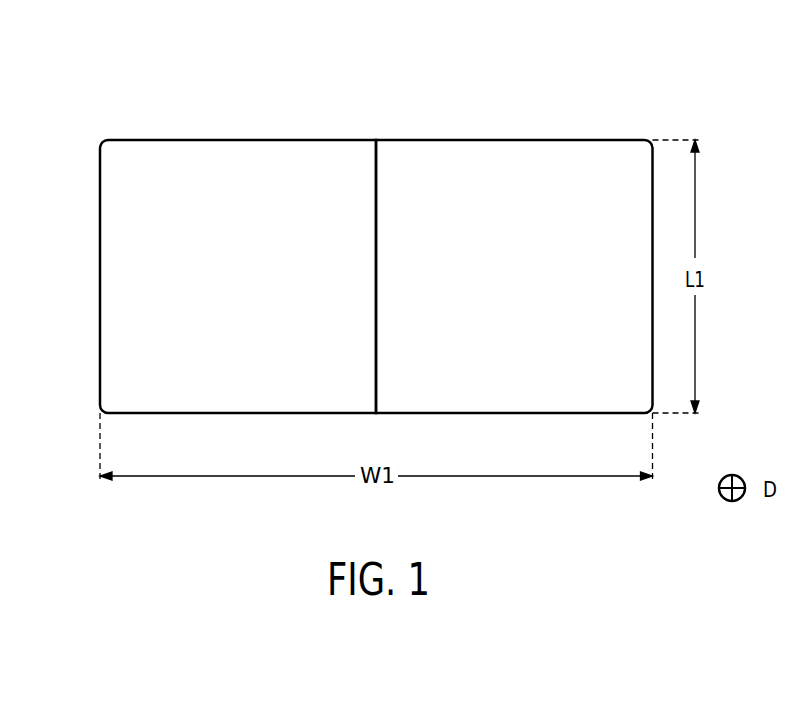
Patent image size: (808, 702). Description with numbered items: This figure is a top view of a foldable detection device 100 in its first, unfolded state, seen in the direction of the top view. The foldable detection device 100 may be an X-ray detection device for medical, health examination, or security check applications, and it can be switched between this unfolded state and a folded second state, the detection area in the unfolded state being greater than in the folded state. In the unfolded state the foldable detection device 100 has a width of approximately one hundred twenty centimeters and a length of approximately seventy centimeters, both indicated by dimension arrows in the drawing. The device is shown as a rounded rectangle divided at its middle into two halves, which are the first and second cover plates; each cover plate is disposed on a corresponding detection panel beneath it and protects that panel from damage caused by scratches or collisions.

The foldable detection device 100 is at (376, 216).